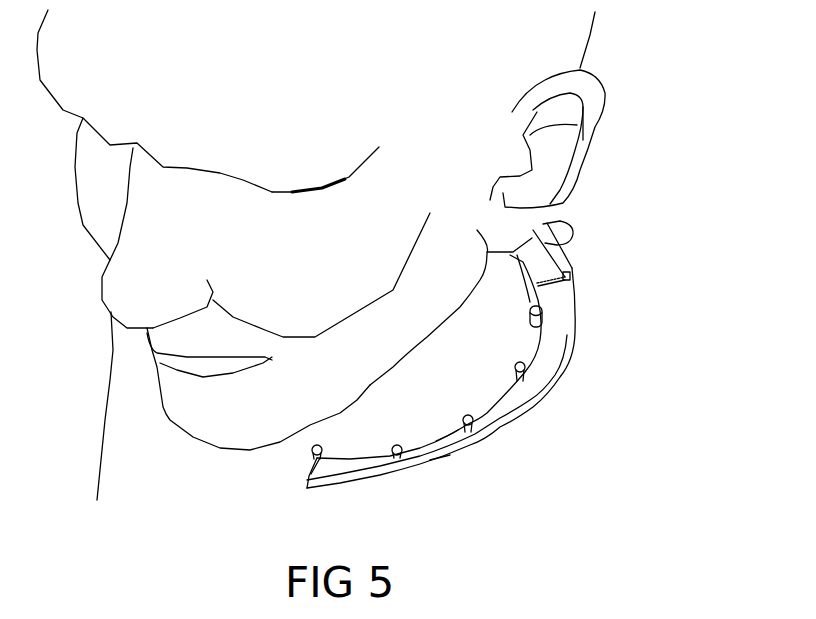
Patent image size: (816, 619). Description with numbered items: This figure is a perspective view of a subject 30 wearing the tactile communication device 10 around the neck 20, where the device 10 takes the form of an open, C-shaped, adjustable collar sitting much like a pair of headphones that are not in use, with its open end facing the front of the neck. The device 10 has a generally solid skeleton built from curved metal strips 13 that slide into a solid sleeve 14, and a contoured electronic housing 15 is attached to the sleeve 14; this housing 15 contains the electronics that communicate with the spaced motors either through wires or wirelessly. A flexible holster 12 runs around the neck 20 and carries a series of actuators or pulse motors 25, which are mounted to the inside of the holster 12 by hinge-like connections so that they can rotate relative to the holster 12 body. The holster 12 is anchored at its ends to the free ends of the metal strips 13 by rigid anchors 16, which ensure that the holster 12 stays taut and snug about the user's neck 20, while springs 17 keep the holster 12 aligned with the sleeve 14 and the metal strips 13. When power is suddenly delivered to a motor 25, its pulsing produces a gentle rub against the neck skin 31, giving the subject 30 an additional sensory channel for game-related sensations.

The device 10 is at (570, 410).
The holster 12 is at (572, 340).
The metal strips 13 is at (521, 360).
The sleeve 14 is at (568, 260).
The electronic housing 15 is at (562, 220).
The anchors 16 is at (307, 472).
The springs 17 is at (545, 283).
The neck 20 is at (442, 407).
The pulse motors 25 is at (440, 457).
The subject 30 is at (602, 42).
The neck skin 31 is at (483, 327).